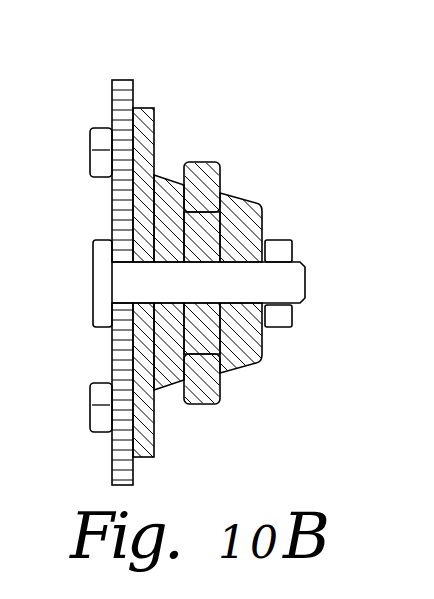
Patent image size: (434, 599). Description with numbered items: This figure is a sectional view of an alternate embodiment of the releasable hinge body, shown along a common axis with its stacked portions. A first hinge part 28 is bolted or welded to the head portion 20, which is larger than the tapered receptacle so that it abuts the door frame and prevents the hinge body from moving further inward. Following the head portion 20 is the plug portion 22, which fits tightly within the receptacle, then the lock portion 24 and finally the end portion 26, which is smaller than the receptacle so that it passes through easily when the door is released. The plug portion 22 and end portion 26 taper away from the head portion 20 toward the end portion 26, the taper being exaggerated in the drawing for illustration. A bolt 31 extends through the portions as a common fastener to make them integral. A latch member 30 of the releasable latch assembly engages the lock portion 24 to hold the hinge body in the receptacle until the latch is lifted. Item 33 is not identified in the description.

The head portion 20 is at (146, 107).
The plug portion 22 is at (158, 174).
The lock portion 24 is at (208, 340).
The end portion 26 is at (251, 221).
The first hinge part 28 is at (120, 80).
The latch member 30 is at (223, 183).
The bolt 31 is at (292, 277).
The bolt 33 is at (90, 156).